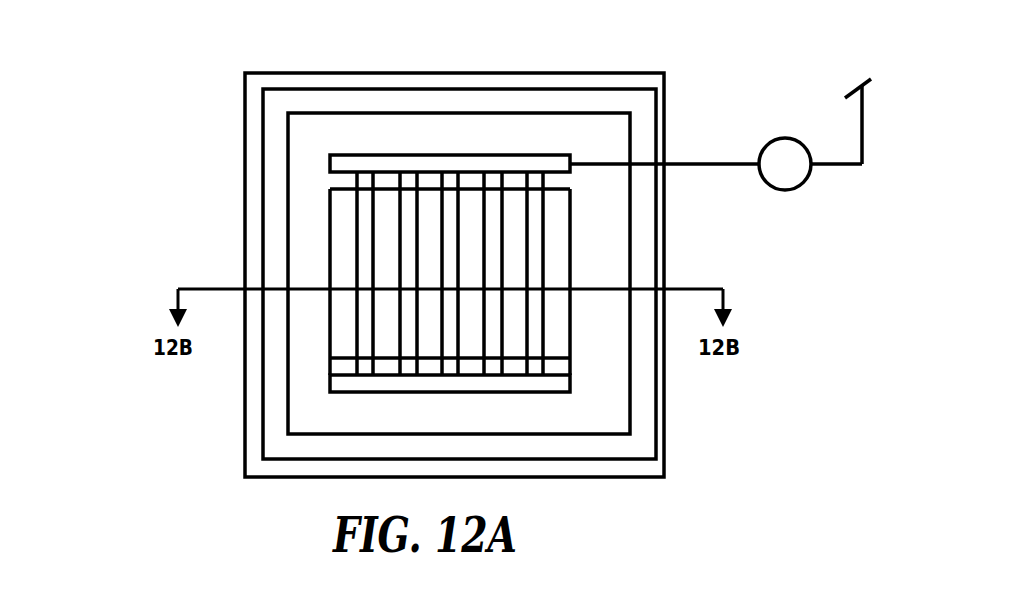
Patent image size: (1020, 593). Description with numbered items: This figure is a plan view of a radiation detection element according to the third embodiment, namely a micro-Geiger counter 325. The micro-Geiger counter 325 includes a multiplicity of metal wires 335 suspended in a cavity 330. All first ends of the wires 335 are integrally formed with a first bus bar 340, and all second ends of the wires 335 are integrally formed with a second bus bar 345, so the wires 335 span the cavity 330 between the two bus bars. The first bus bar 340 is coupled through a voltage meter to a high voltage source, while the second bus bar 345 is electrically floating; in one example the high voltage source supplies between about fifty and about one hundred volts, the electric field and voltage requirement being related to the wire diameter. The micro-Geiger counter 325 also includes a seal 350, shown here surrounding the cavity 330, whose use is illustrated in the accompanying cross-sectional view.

The micro-Geiger counter 325 is at (122, 122).
The cavity 330 is at (562, 265).
The metal wires 335 is at (405, 222).
The first bus bar 340 is at (365, 163).
The second bus bar 345 is at (357, 383).
The seal 350 is at (535, 105).